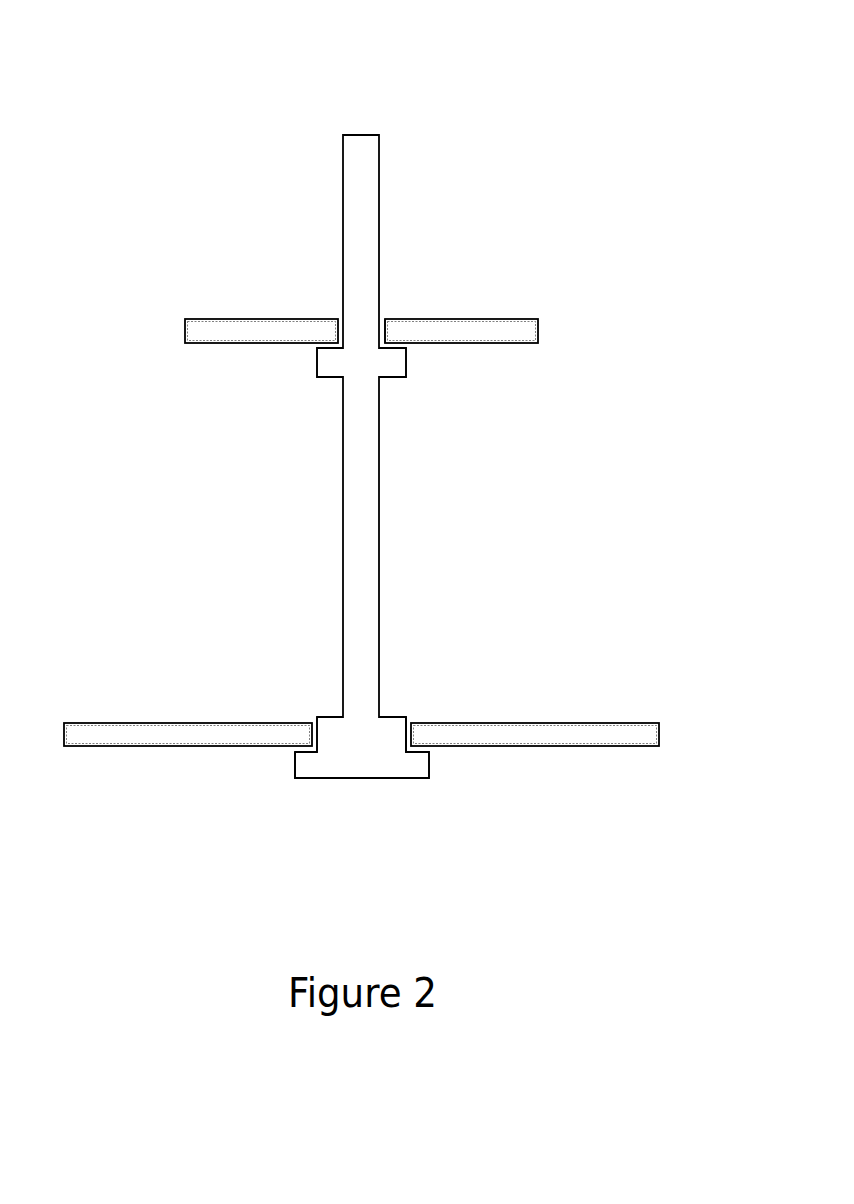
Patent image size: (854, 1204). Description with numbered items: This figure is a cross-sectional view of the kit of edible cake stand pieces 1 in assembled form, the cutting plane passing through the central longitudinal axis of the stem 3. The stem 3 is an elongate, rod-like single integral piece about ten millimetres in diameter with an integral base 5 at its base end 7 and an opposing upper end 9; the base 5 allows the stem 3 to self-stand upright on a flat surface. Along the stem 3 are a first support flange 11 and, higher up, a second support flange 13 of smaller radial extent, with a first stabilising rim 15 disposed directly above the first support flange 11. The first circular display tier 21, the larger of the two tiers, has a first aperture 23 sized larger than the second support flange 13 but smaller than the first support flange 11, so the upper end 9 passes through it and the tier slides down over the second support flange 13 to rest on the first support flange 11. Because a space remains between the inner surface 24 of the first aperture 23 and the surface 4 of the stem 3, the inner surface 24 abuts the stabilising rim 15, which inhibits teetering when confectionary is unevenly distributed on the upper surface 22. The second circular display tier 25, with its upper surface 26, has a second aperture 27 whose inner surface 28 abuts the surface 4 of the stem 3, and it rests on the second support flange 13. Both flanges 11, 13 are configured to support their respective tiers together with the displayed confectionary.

The kit of edible cake stand pieces 1 is at (186, 208).
The stem 3 is at (383, 403).
The surface of the stem 4 is at (368, 460).
The base 5 is at (340, 780).
The base end 7 is at (362, 819).
The upper end 9 is at (370, 127).
The first support flange 11 is at (312, 764).
The second support flange 13 is at (328, 363).
The first stabilising rim 15 is at (405, 718).
The first circular display tier 21 is at (660, 735).
The upper surface of the first display tier 22 is at (615, 722).
The first aperture 23 is at (313, 722).
The inner surface of the first aperture 24 is at (412, 734).
The second circular display tier 25 is at (539, 327).
The upper surface of the second display tier 26 is at (503, 320).
The second aperture 27 is at (338, 318).
The inner surface of the second aperture 28 is at (387, 330).